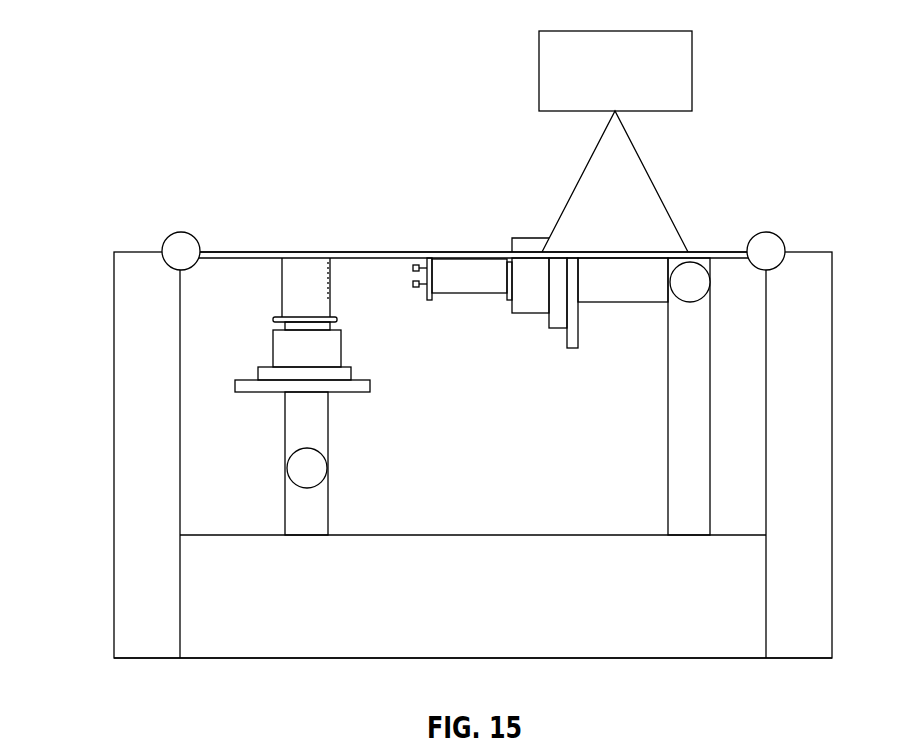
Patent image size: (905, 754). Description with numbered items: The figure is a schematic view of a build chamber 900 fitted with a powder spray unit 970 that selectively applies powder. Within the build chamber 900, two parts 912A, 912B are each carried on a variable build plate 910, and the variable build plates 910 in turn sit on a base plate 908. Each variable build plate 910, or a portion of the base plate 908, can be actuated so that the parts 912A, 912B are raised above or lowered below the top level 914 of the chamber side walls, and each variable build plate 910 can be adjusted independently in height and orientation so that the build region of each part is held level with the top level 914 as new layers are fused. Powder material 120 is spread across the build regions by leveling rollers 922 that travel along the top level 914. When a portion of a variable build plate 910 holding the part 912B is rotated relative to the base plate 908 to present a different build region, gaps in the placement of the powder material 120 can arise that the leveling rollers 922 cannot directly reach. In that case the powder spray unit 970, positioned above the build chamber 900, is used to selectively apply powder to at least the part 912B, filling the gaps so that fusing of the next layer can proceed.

The build chamber 900 is at (128, 44).
The top level 914 is at (131, 252).
The base plate 908 is at (283, 658).
The powder material 120 is at (470, 252).
The leveling rollers 922 is at (173, 234).
The variable build plate 910 is at (285, 522).
The part 912A is at (282, 305).
The part 912B is at (472, 295).
The powder spray unit 970 is at (539, 73).